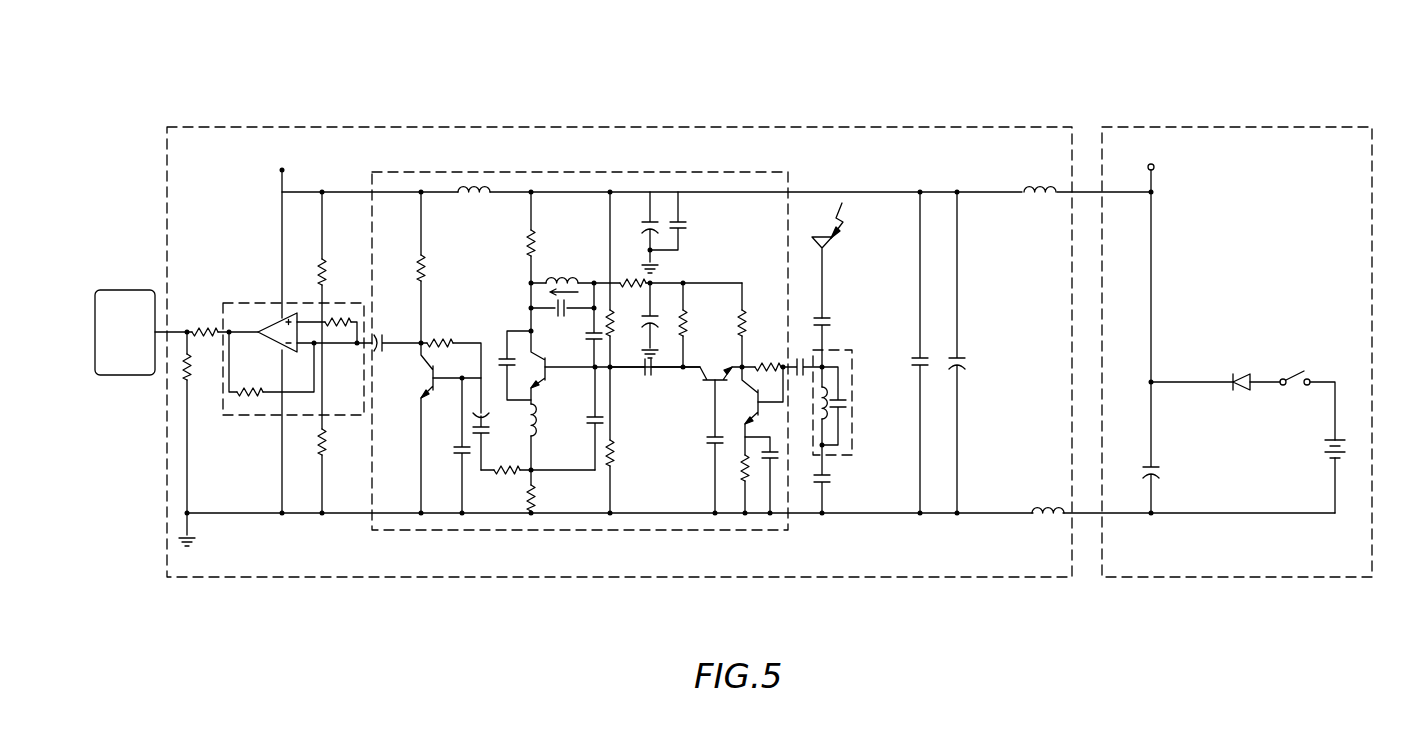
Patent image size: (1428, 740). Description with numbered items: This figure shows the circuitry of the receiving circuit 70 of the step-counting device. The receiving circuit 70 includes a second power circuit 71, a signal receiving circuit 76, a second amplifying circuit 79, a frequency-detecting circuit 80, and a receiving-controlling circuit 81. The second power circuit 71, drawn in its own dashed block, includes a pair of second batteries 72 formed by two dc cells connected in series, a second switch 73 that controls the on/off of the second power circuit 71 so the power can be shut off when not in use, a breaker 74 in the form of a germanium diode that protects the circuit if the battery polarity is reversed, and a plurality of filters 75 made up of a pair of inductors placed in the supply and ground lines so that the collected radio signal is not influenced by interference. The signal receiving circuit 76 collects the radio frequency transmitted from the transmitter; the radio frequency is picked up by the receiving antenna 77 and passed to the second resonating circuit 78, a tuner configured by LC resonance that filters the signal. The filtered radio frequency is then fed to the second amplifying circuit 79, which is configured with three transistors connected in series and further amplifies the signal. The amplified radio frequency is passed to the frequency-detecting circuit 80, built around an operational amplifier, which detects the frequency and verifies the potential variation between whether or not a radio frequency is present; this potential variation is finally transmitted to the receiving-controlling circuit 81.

The receiving circuit 70 is at (796, 80).
The second power circuit 71 is at (1237, 130).
The second batteries 72 is at (1345, 447).
The second switch 73 is at (1302, 360).
The breaker 74 is at (1240, 344).
The filters 75 is at (1046, 150).
The signal receiving circuit 76 is at (497, 127).
The receiving antenna 77 is at (838, 243).
The second resonating circuit 78 is at (852, 447).
The second amplifying circuit 79 is at (716, 172).
The frequency-detecting circuit 80 is at (240, 302).
The receiving-controlling circuit 81 is at (125, 332).